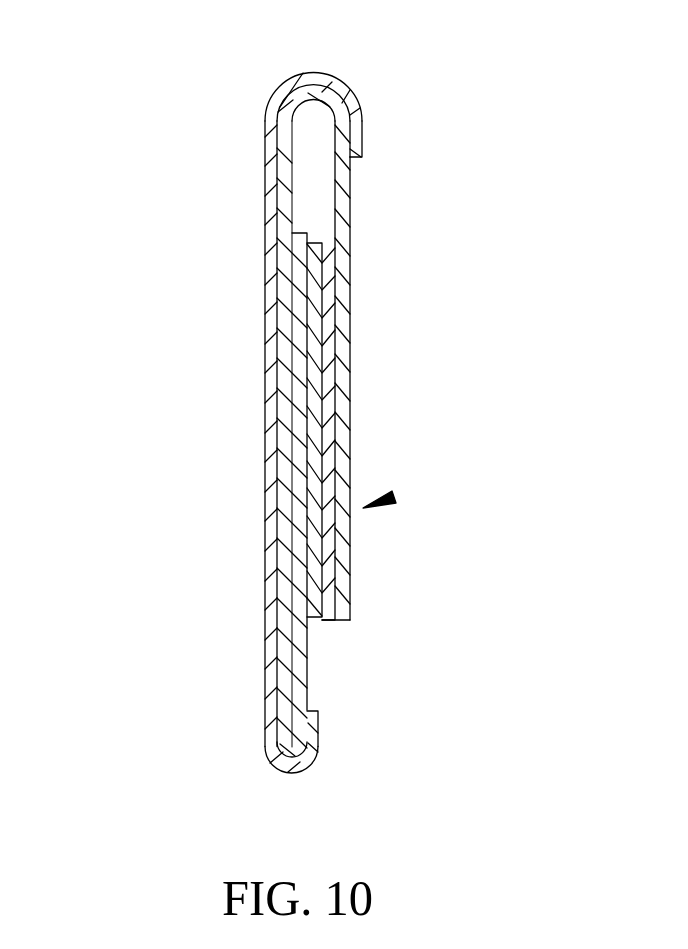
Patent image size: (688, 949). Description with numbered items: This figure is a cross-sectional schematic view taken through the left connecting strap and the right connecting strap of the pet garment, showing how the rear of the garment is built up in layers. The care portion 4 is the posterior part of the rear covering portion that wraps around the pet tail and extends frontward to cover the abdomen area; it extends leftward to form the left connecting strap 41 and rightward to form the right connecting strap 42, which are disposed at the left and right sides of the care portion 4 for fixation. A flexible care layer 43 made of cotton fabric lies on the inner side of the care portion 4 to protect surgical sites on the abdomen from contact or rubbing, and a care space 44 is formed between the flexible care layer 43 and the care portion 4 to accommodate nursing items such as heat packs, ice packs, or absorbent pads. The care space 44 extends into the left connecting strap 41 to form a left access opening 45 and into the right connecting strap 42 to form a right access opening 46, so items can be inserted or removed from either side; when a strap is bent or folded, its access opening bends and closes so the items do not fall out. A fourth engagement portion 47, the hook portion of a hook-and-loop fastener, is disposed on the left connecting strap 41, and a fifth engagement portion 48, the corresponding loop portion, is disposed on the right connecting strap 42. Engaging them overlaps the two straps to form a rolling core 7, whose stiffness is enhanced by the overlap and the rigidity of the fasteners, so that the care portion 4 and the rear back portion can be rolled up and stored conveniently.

The care portion 4 is at (320, 390).
The rolling core 7 is at (542, 443).
The left connecting strap 41 is at (305, 358).
The right connecting strap 42 is at (338, 315).
The flexible care layer 43 is at (270, 182).
The care space 44 is at (270, 258).
The left access opening 45 is at (503, 605).
The right access opening 46 is at (363, 148).
The fourth engagement portion 47 is at (305, 478).
The fifth engagement portion 48 is at (333, 413).